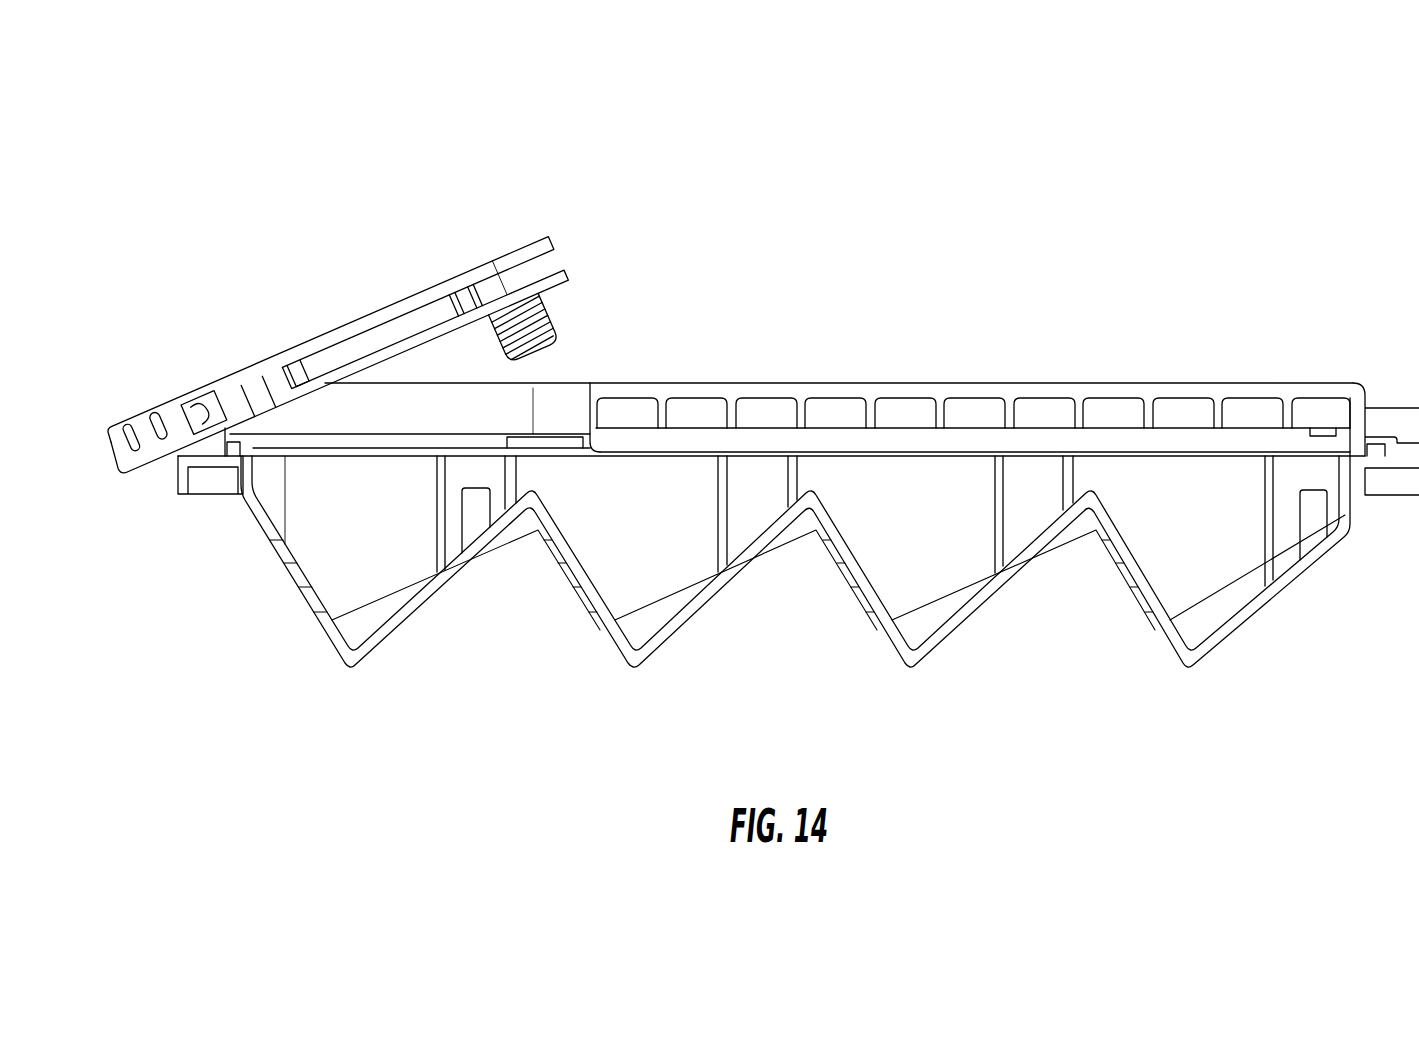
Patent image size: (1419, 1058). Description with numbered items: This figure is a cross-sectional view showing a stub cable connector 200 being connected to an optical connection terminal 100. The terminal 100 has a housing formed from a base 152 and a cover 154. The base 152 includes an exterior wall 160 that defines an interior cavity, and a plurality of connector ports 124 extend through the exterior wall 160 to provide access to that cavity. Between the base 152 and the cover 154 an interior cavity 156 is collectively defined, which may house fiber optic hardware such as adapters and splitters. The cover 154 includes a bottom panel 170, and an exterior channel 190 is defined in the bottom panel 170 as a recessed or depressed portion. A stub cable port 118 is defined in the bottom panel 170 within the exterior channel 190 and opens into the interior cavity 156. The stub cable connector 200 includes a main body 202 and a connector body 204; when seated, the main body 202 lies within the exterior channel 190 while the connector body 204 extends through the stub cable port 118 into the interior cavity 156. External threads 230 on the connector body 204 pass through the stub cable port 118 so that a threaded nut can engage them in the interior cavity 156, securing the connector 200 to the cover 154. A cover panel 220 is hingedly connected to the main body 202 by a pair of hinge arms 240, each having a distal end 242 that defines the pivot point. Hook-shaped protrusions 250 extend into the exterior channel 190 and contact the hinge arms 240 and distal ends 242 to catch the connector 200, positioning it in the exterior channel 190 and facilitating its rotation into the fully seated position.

The terminal 100 is at (1027, 213).
The stub cable port 118 is at (537, 452).
The connector ports 124 is at (578, 572).
The base 152 is at (1027, 603).
The cover 154 is at (948, 380).
The interior cavity 156 is at (925, 547).
The exterior wall 160 is at (707, 626).
The bottom panel 170 is at (710, 381).
The exterior channel 190 is at (555, 405).
The stub cable connector 200 is at (413, 268).
The main body 202 is at (405, 362).
The connector body 204 is at (490, 342).
The cover panel 220 is at (308, 327).
The external threads 230 is at (562, 310).
The hinge arms 240 is at (183, 407).
The distal end 242 is at (197, 418).
The hook-shaped protrusions 250 is at (234, 460).